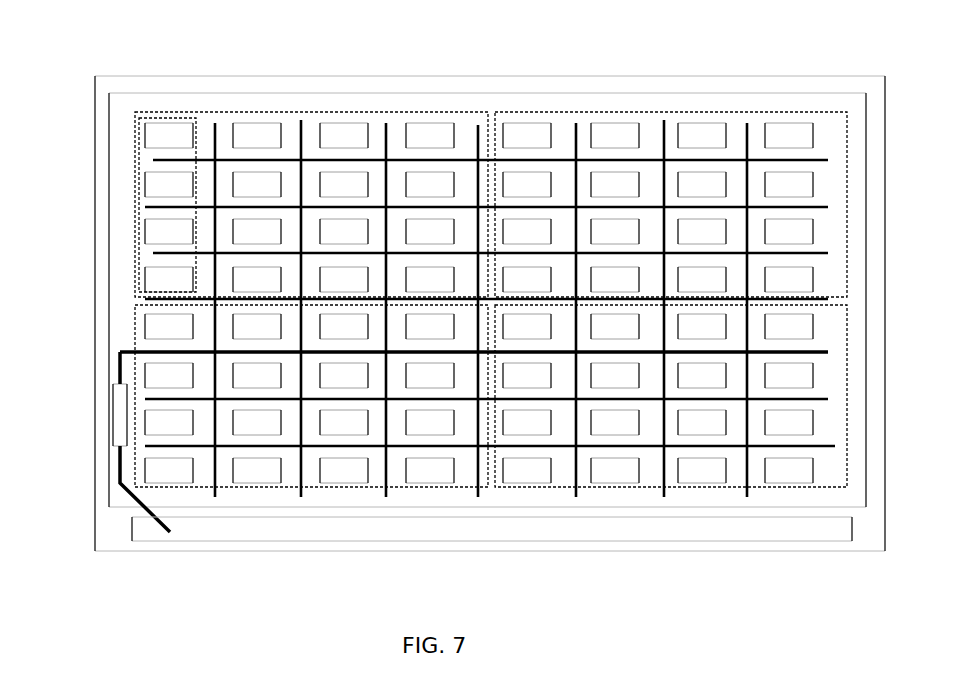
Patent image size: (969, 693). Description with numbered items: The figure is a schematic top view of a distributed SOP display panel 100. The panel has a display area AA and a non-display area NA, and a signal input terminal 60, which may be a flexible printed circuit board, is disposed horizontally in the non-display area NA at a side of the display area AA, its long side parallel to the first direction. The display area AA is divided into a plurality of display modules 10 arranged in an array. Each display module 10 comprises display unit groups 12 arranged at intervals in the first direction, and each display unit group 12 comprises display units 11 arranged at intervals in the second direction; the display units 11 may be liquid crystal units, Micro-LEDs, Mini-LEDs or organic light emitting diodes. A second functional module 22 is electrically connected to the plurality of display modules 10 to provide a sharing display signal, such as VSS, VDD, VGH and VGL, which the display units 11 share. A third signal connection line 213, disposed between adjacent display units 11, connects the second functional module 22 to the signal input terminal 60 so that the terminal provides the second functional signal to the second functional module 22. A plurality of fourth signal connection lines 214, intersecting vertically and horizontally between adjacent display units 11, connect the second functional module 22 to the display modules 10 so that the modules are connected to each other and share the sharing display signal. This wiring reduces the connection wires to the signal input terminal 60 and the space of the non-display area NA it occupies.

The distributed SOP display panel 100 is at (523, 76).
The display module 10 is at (234, 112).
The display unit 11 is at (438, 133).
The display unit group 12 is at (167, 118).
The fourth signal connection line 214 is at (215, 341).
The second functional module 22 is at (122, 408).
The third signal connection line 213 is at (117, 463).
The signal input terminal 60 is at (427, 532).
The display area AA is at (131, 110).
The non-display area NA is at (119, 534).